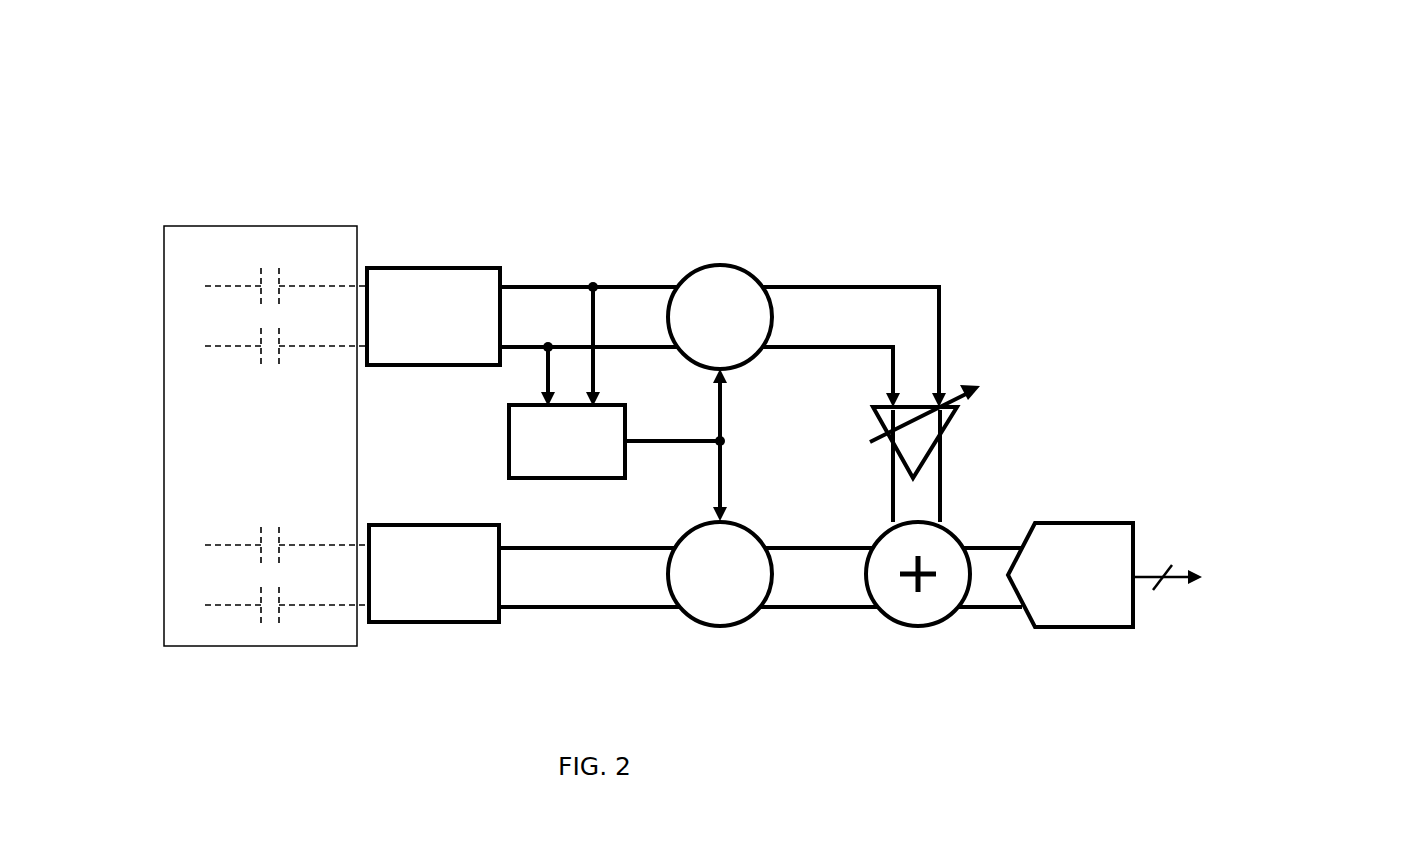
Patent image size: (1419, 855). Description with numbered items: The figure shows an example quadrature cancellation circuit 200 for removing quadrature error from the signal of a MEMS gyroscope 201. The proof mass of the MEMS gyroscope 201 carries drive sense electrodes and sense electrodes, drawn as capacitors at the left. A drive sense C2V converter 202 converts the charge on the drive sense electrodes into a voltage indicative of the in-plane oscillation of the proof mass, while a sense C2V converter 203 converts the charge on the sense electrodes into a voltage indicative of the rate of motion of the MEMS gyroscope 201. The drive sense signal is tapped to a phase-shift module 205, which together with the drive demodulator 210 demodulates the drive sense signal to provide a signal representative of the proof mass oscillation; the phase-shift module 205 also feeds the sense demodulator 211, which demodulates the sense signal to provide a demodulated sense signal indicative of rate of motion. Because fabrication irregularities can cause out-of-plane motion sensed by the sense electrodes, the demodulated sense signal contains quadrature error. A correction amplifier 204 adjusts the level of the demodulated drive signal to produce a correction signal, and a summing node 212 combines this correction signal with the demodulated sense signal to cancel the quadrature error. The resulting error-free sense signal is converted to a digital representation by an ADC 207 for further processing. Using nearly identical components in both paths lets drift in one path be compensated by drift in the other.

The quadrature cancellation circuit 200 is at (615, 92).
The MEMS gyroscope 201 is at (277, 226).
The drive sense C2V converter 202 is at (470, 268).
The sense C2V converter 203 is at (437, 622).
The correction amplifier 204 is at (948, 430).
The phase-shift module 205 is at (627, 418).
The ADC 207 is at (1070, 523).
The drive demodulator 210 is at (720, 265).
The sense demodulator 211 is at (723, 630).
The summing node 212 is at (912, 630).